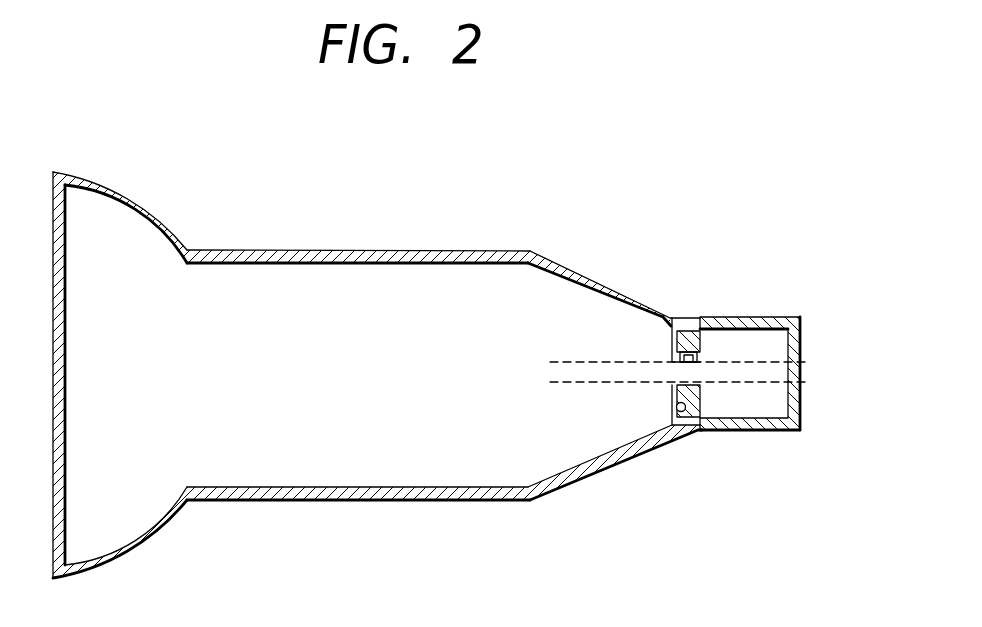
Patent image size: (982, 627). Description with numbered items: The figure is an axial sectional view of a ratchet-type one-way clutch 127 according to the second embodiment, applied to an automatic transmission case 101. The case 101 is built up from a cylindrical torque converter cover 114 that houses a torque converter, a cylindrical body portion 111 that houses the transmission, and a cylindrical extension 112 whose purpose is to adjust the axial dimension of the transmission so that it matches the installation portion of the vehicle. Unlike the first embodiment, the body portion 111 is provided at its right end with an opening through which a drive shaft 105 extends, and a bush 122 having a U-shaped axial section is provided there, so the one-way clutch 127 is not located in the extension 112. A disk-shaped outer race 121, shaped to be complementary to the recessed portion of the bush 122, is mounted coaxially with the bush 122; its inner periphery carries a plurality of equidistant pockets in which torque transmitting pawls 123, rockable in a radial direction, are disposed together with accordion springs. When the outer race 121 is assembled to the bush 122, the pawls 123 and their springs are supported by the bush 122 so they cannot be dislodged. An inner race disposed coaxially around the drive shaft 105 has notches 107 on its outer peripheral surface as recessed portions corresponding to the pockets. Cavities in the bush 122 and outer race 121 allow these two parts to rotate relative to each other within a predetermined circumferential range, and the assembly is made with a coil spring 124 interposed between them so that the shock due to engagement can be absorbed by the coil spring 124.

The automatic transmission case 101 is at (377, 198).
The drive shaft 105 is at (807, 374).
The notches 107 is at (690, 372).
The body portion 111 is at (576, 273).
The extension 112 is at (755, 320).
The torque converter cover 114 is at (97, 177).
The outer race 121 is at (703, 418).
The bush 122 is at (674, 330).
The pawls 123 is at (684, 338).
The coil spring 124 is at (682, 412).
The one-way clutch 127 is at (667, 405).